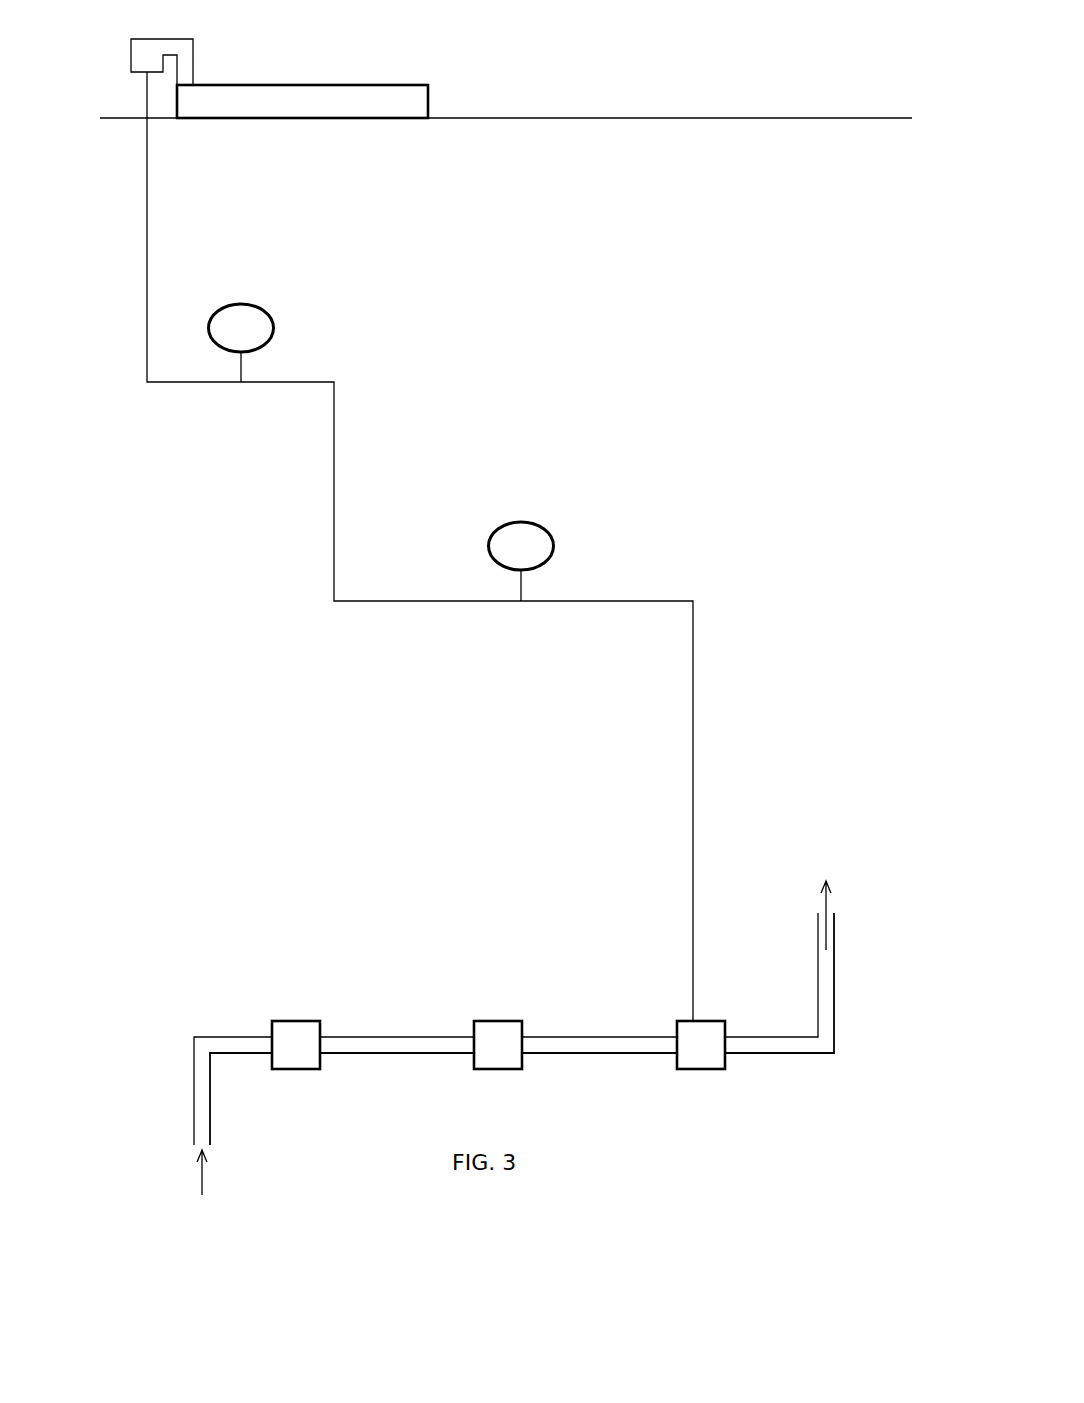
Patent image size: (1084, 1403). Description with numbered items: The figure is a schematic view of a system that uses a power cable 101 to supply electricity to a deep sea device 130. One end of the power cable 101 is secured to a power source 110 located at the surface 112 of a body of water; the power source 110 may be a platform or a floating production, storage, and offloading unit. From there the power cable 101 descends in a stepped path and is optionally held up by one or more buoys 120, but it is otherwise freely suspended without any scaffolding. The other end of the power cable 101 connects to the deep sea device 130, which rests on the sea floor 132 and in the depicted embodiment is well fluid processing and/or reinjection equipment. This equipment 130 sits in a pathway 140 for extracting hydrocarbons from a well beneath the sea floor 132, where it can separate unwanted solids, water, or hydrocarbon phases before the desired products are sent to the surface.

The power cable 101 is at (168, 209).
The power source 110 is at (298, 85).
The surface of a body of water 112 is at (607, 117).
The buoy 120 is at (484, 507).
The deep sea device 130 is at (659, 1017).
The sea floor 132 is at (139, 1067).
The pathway 140 is at (837, 998).